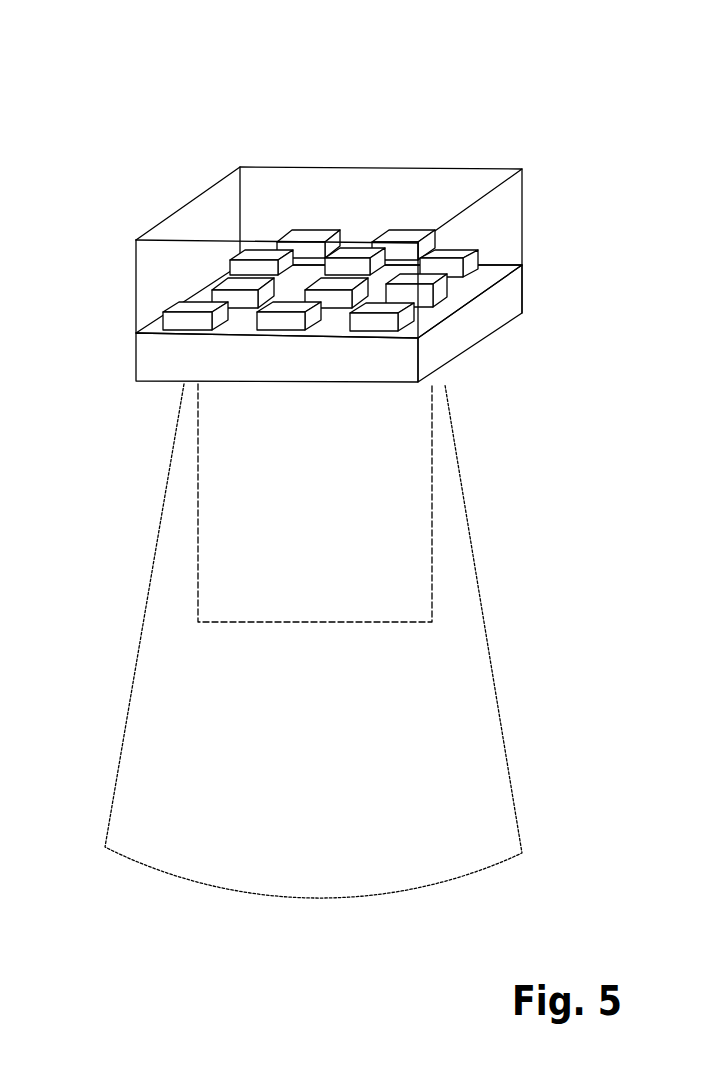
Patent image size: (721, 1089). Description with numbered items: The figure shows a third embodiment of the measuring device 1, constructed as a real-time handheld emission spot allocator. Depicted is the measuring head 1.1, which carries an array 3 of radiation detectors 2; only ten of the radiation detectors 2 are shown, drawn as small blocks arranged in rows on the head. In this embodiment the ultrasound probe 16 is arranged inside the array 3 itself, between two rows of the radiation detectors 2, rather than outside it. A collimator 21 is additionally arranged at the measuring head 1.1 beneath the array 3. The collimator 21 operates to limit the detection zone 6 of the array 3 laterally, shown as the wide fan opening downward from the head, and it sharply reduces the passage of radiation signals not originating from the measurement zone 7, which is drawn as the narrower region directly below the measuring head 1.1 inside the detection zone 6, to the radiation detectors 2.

The measuring device 1 is at (563, 101).
The measuring head 1.1 is at (166, 231).
The radiation detectors 2 is at (290, 305).
The array 3 is at (287, 58).
The ultrasound probe 16 is at (448, 290).
The collimator 21 is at (157, 365).
The measurement zone 7 is at (420, 513).
The detection zone 6 is at (453, 705).